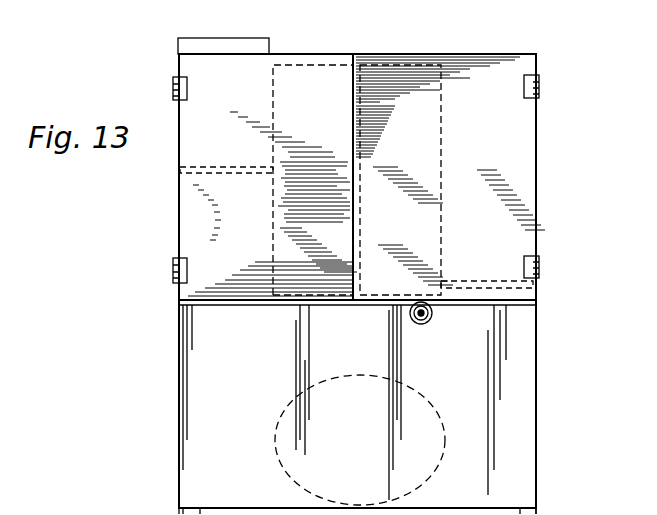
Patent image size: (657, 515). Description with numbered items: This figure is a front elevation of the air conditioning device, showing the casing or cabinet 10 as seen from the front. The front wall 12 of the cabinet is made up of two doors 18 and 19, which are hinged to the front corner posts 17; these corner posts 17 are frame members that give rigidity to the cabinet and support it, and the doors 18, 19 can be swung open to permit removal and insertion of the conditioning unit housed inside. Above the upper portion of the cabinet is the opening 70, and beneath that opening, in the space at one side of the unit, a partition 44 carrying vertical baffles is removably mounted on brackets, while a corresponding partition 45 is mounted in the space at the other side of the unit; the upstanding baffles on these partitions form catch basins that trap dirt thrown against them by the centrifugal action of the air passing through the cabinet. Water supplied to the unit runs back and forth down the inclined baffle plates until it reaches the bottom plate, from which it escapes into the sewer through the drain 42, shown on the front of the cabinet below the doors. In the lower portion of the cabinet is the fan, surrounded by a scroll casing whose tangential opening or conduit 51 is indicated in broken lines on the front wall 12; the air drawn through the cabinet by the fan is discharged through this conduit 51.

The casing or cabinet 10 is at (529, 53).
The front wall 12 is at (512, 378).
The supporting bars or corner posts 17 is at (182, 508).
The door 18 is at (298, 80).
The door 19 is at (392, 76).
The drain 42 is at (431, 321).
The partition 44 is at (183, 171).
The partition 45 is at (515, 285).
The tangential opening or conduit 51 is at (288, 412).
The opening 70 is at (206, 38).